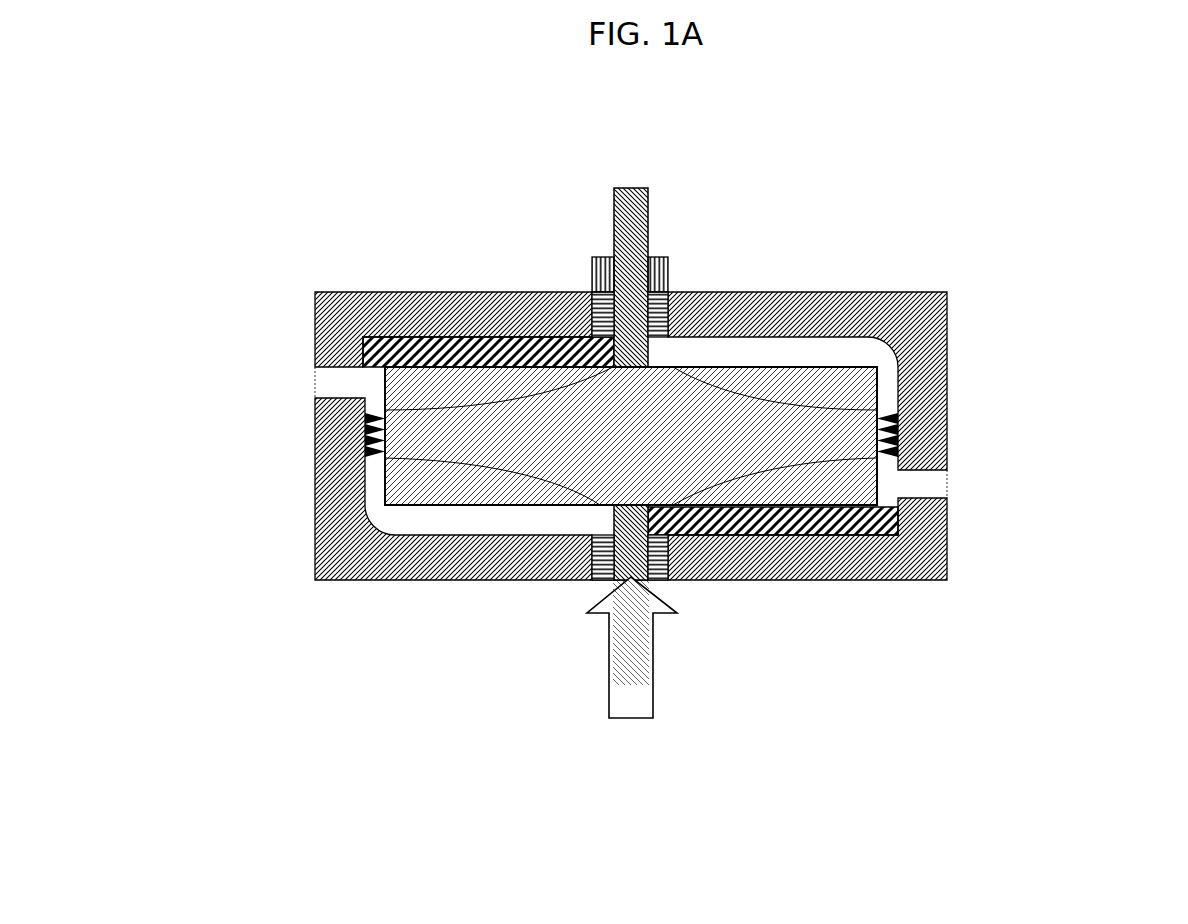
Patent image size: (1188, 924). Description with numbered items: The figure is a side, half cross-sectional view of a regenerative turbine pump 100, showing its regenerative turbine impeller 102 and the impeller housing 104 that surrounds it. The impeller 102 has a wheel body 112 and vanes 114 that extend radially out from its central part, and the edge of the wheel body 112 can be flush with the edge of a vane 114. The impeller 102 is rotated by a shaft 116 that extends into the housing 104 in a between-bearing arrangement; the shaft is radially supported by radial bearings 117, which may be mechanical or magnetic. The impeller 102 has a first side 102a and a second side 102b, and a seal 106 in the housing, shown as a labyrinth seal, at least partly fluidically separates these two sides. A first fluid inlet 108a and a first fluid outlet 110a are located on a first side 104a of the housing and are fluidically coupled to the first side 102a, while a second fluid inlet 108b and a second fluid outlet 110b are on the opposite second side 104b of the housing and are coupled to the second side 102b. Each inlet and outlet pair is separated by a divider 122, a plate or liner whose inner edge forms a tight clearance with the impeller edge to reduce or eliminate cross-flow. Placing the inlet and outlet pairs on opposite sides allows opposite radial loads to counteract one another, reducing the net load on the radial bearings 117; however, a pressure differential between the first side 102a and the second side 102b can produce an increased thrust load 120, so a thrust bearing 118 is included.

The regenerative turbine pump 100 is at (277, 228).
The regenerative turbine impeller 102 is at (640, 439).
The first side of the impeller 102a is at (772, 367).
The second side of the impeller 102b is at (500, 505).
The impeller housing 104 is at (628, 460).
The first side of the pump housing 104a is at (315, 510).
The second side of the pump housing 104b is at (947, 357).
The seal 106 is at (947, 413).
The first fluid inlet 108a is at (314, 381).
The second fluid inlet 108b is at (948, 483).
The first fluid outlet 110a is at (314, 381).
The second fluid outlet 110b is at (948, 483).
The wheel body 112 is at (631, 436).
The vanes 114 is at (832, 580).
The shaft 116 is at (615, 223).
The radial bearings 117 is at (680, 292).
The thrust bearing 118 is at (592, 273).
The thrust load 120 is at (630, 718).
The divider 122 is at (315, 317).